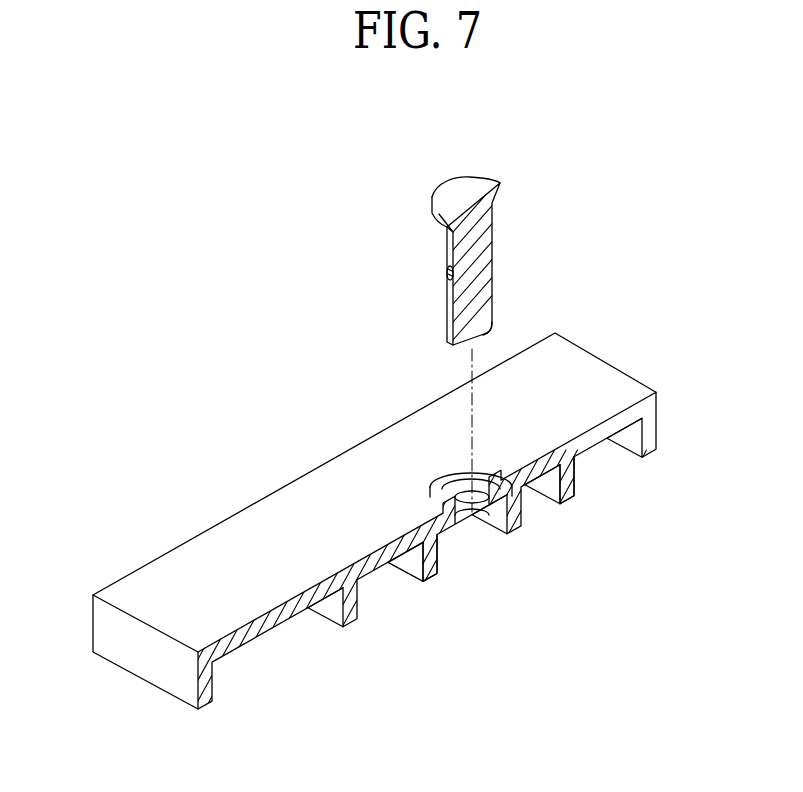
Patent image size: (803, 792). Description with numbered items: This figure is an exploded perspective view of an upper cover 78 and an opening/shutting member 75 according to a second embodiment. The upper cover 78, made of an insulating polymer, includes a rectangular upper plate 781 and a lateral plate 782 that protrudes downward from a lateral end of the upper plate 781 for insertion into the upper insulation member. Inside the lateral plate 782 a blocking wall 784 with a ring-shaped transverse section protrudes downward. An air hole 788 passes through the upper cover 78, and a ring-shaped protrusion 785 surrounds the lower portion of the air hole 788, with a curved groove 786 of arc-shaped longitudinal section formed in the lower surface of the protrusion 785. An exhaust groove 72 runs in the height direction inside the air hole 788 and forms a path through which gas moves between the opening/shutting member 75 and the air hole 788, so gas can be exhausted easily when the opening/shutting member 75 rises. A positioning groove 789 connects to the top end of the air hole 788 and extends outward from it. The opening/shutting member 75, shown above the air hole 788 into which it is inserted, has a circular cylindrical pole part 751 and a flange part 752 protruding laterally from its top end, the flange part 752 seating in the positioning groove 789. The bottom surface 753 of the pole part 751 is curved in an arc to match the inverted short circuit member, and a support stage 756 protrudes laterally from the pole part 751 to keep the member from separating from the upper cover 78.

The opening/shutting member 75 is at (471, 301).
The pole part 751 is at (480, 232).
The flange part 752 is at (468, 186).
The bottom surface 753 is at (493, 327).
The support stage 756 is at (447, 274).
The upper cover 78 is at (411, 523).
The upper plate 781 is at (582, 372).
The lateral plate 782 is at (128, 645).
The blocking wall 784 is at (558, 483).
The protrusion 785 is at (407, 560).
The curved groove 786 is at (437, 553).
The air hole 788 is at (470, 492).
The positioning groove 789 is at (440, 497).
The exhaust groove 72 is at (485, 524).